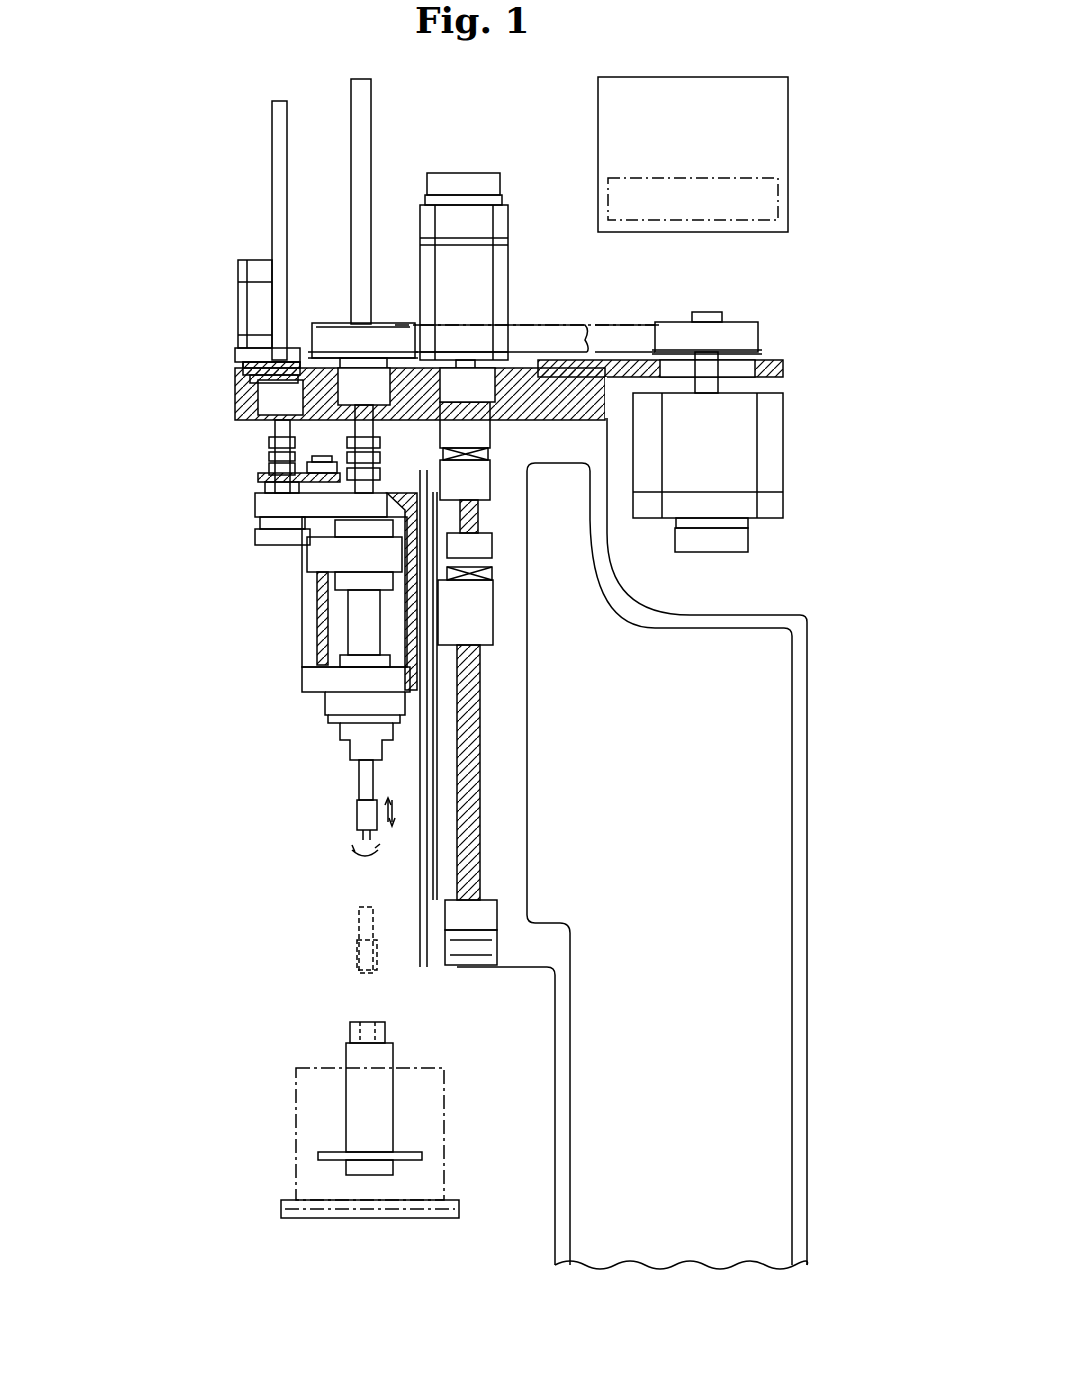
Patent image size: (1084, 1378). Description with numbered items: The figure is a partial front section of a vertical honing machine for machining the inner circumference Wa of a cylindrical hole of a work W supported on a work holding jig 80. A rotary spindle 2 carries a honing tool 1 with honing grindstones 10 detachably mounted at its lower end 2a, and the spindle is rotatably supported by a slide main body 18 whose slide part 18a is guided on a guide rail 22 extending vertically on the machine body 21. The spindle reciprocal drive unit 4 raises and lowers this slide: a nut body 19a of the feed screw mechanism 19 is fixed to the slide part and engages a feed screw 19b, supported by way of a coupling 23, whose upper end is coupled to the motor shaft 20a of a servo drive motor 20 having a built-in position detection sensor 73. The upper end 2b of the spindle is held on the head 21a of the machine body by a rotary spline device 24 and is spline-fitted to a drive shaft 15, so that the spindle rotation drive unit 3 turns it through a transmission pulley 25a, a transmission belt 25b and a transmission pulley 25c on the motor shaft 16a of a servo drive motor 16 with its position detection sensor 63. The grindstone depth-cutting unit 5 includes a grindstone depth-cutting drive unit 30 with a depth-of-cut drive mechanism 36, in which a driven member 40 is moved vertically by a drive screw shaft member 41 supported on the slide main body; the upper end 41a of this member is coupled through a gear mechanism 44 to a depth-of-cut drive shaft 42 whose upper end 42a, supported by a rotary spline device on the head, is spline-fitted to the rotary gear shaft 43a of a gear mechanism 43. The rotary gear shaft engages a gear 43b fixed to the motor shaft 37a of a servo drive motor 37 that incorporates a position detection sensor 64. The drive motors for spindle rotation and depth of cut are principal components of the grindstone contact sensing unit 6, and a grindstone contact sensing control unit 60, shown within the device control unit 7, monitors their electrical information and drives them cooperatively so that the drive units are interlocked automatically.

The honing tool 1 is at (352, 800).
The rotary spindle 2 is at (360, 620).
The lower end 2a is at (355, 752).
The upper end 2b is at (360, 172).
The spindle rotation drive unit 3 is at (812, 300).
The spindle reciprocal drive unit 4 is at (495, 573).
The grindstone depth-cutting unit 5 is at (212, 505).
The grindstone contact sensing unit 6 is at (717, 335).
The device control unit 7 is at (790, 118).
The honing grindstones 10 is at (368, 815).
The drive shaft 15 is at (370, 355).
The drive motor 16 is at (710, 438).
The motor shaft 16a is at (712, 368).
The slide main body 18 is at (300, 680).
The slide part 18a is at (425, 500).
The feed screw mechanism 19 is at (585, 615).
The nut body 19a is at (458, 608).
The feed screw 19b is at (475, 660).
The drive motor 20 is at (470, 285).
The motor shaft 20a is at (480, 372).
The machine body 21 is at (525, 972).
The head 21a is at (270, 403).
The guide rail 22 is at (420, 885).
The coupling 23 is at (445, 392).
The rotary spline device 24 is at (355, 392).
The transmission pulley 25a is at (338, 323).
The transmission belt 25b is at (625, 330).
The transmission pulley 25c is at (758, 330).
The grindstone depth-cutting drive unit 30 is at (268, 600).
The depth-of-cut drive mechanism 36 is at (190, 565).
The drive motor 37 is at (255, 318).
The motor shaft 37a is at (250, 356).
The driven member 40 is at (320, 555).
The drive screw shaft member 41 is at (318, 582).
The upper end 41a is at (300, 532).
The depth-of-cut drive shaft 42 is at (270, 470).
The upper end 42a is at (275, 190).
The gear mechanism 43 is at (140, 370).
The rotary gear shaft 43a is at (255, 393).
The gear 43b is at (245, 368).
The rotary spline device 44 is at (272, 430).
The grindstone contact sensing control unit 60 is at (780, 188).
The position detection sensor 63 is at (725, 488).
The position detection sensor 64 is at (255, 290).
The position detection sensor 73 is at (475, 222).
The work holding jig 80 is at (296, 1135).
The work W is at (344, 1055).
The inner circumference Wa is at (350, 1020).